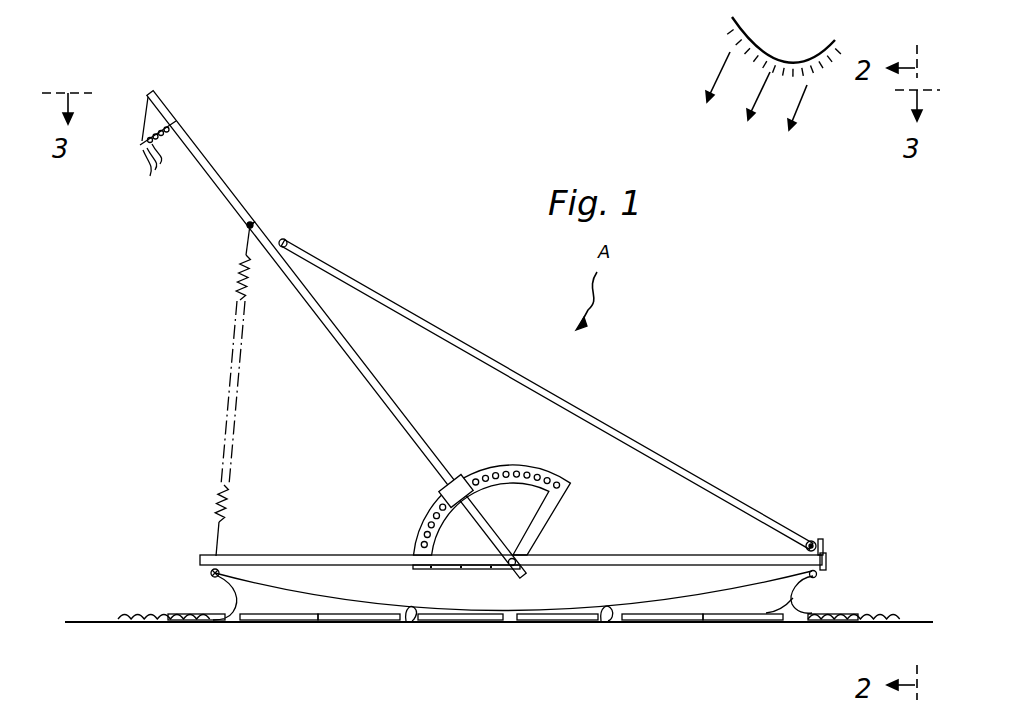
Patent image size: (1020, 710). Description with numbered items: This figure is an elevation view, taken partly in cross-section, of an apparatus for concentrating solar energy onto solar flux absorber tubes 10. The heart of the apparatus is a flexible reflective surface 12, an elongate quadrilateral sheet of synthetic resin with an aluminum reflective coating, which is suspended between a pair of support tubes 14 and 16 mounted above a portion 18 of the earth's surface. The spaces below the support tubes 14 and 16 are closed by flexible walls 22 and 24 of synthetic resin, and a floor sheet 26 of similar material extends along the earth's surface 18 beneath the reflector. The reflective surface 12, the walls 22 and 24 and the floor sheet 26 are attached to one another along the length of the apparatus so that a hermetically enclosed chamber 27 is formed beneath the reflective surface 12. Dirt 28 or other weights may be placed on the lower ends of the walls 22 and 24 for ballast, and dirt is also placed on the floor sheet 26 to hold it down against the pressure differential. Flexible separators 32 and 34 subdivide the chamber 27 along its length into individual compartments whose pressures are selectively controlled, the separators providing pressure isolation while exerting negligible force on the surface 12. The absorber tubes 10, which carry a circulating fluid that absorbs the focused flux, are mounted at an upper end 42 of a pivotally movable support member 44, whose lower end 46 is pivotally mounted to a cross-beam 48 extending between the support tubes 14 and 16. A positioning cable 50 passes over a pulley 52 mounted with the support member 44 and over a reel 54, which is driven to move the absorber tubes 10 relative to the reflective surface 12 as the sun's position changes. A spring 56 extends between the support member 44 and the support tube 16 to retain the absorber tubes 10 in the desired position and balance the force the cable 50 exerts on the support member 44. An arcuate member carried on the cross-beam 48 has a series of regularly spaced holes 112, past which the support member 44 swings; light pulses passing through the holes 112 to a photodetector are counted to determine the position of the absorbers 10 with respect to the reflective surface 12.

The solar flux absorber tubes 10 is at (158, 152).
The flexible reflective surface 12 is at (335, 592).
The support tube 14 is at (818, 581).
The support tube 16 is at (210, 573).
The portion of the earth's surface 18 is at (94, 621).
The flexible wall 22 is at (771, 614).
The flexible wall 24 is at (230, 600).
The floor sheet 26 is at (668, 622).
The hermetically enclosed chamber 27 is at (725, 621).
The dirt 28 is at (153, 614).
The flexible separator 32 is at (407, 622).
The flexible separator 34 is at (606, 622).
The upper end of support member 42 is at (184, 137).
The pivotally movable support member 44 is at (348, 352).
The lower end of support member 46 is at (521, 573).
The cross-beam 48 is at (608, 555).
The positioning cable 50 is at (680, 470).
The pulley 52 is at (286, 239).
The reel 54 is at (811, 540).
The spring 56 is at (216, 492).
The holes 112 is at (495, 462).